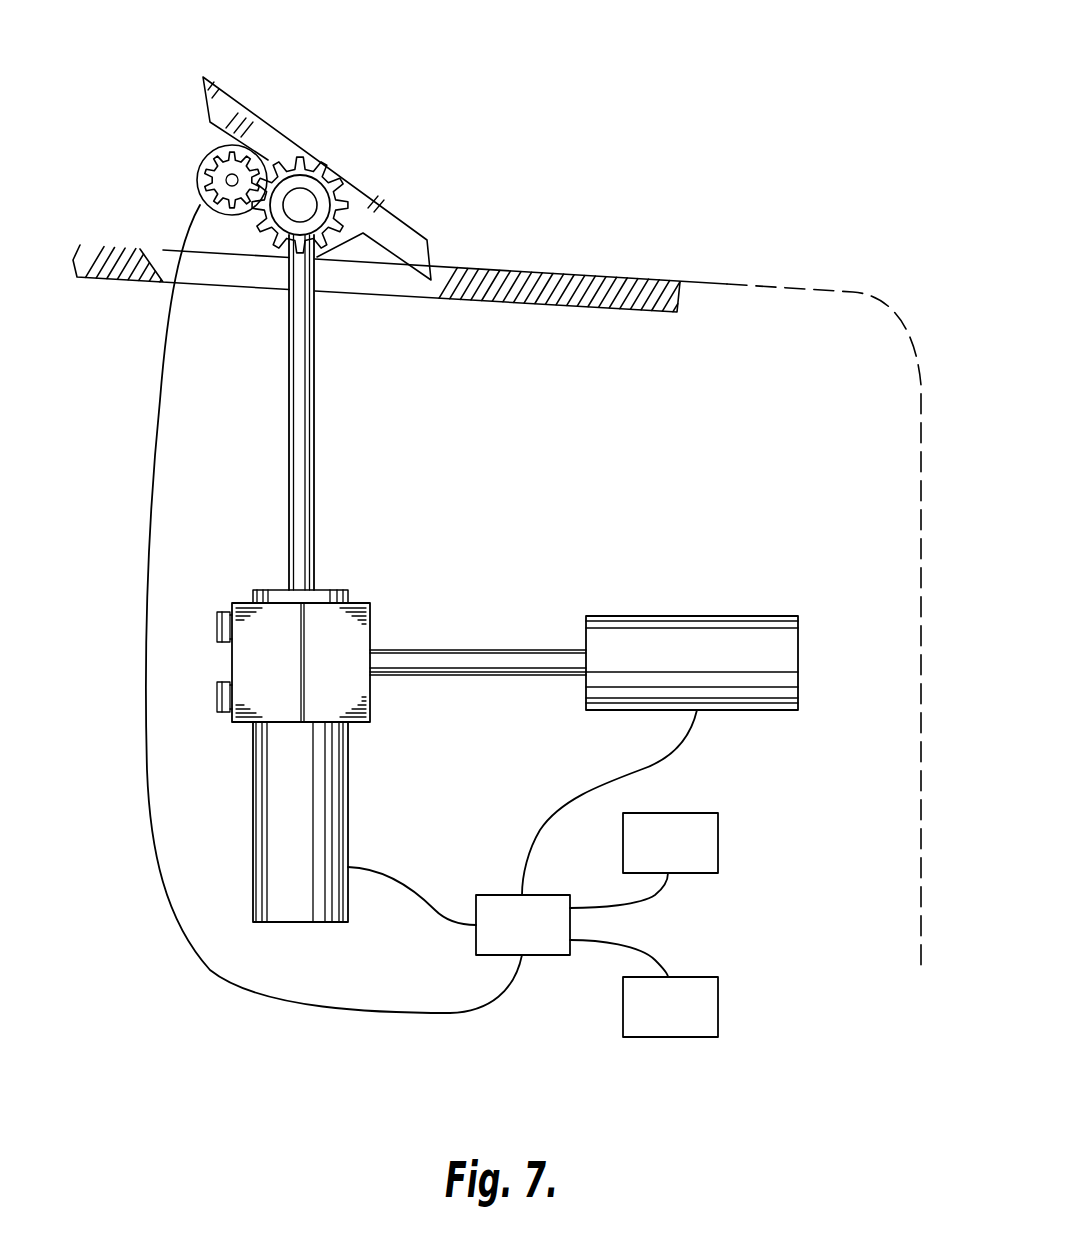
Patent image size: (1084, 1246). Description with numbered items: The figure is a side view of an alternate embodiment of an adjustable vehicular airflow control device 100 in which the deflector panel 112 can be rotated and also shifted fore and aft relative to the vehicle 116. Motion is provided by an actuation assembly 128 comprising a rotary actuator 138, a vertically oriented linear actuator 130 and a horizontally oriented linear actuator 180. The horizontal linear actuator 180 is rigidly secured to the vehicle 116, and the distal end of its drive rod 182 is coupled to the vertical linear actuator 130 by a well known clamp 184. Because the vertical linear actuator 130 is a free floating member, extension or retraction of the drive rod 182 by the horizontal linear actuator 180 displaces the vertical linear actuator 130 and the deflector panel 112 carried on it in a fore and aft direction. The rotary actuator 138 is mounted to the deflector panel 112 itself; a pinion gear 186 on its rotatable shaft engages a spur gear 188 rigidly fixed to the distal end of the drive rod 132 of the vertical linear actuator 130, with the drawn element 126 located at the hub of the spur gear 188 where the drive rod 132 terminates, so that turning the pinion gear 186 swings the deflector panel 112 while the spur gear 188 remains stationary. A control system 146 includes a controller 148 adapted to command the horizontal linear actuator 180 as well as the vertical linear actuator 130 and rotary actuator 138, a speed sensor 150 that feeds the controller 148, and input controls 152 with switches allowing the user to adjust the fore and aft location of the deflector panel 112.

The adjustable vehicular airflow control device 100 is at (675, 106).
The deflector panel 112 is at (405, 218).
The vehicle 116 is at (793, 287).
The axle 126 is at (307, 203).
The actuation assembly 128 is at (696, 486).
The vertical linear actuator 130 is at (347, 798).
The drive rod 132 is at (314, 415).
The rotary actuator 138 is at (208, 147).
The control system 146 is at (721, 1081).
The controller 148 is at (505, 895).
The speed sensor 150 is at (718, 1002).
The input controls 152 is at (707, 813).
The horizontal linear actuator 180 is at (741, 613).
The drive rod 182 is at (510, 650).
The clamp 184 is at (367, 603).
The pinion gear 186 is at (203, 193).
The spur gear 188 is at (301, 158).